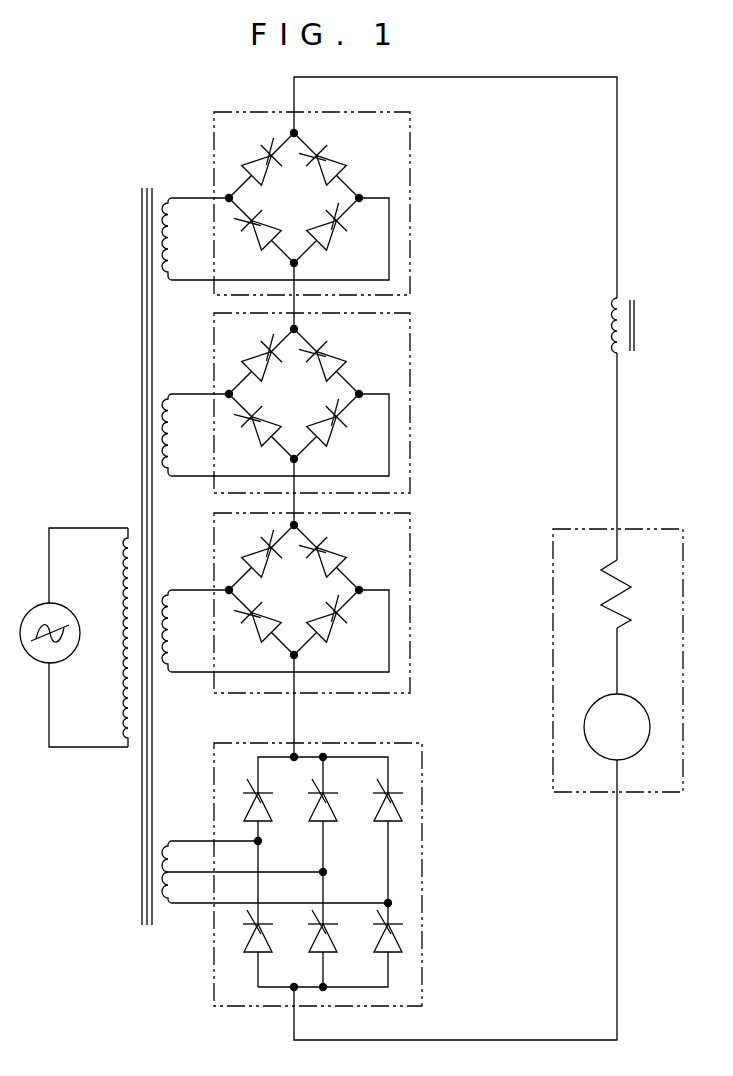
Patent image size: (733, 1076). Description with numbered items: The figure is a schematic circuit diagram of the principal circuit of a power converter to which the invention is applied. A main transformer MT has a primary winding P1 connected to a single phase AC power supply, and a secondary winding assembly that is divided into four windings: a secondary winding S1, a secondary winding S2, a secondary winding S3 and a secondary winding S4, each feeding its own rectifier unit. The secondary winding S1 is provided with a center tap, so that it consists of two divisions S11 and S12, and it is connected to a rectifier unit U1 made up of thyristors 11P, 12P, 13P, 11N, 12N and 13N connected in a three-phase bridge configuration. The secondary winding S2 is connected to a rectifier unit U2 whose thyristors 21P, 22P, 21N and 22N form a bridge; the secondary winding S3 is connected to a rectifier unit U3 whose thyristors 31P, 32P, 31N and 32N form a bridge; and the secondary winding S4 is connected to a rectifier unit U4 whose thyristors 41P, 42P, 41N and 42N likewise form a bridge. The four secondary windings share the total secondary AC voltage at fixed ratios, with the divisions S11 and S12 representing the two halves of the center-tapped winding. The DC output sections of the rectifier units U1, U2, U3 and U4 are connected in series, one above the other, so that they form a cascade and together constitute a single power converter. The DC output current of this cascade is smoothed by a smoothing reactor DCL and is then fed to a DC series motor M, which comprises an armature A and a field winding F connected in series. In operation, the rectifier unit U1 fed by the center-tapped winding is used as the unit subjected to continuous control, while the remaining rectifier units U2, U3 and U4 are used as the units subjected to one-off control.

The main transformer MT is at (147, 184).
The primary winding P1 is at (118, 665).
The secondary winding S1 is at (274, 877).
The secondary winding division S11 is at (177, 878).
The secondary winding division S12 is at (176, 851).
The secondary winding S2 is at (275, 653).
The secondary winding S3 is at (275, 453).
The secondary winding S4 is at (176, 258).
The rectifier unit U1 is at (320, 874).
The rectifier unit U2 is at (308, 612).
The rectifier unit U3 is at (310, 413).
The rectifier unit U4 is at (313, 213).
The thyristor 11P is at (371, 808).
The thyristor 12P is at (309, 808).
The thyristor 13P is at (256, 787).
The thyristor 11N is at (398, 936).
The thyristor 12N is at (342, 942).
The thyristor 13N is at (276, 940).
The thyristor 21P is at (343, 543).
The thyristor 22P is at (250, 543).
The thyristor 21N is at (343, 634).
The thyristor 22N is at (250, 637).
The thyristor 31P is at (343, 347).
The thyristor 32P is at (250, 347).
The thyristor 31N is at (343, 438).
The thyristor 32N is at (250, 441).
The thyristor 41P is at (335, 156).
The thyristor 42P is at (263, 154).
The thyristor 41N is at (338, 240).
The thyristor 42N is at (254, 244).
The smoothing reactor DCL is at (612, 326).
The DC series motor M is at (618, 638).
The field winding F is at (604, 614).
The armature A is at (645, 712).